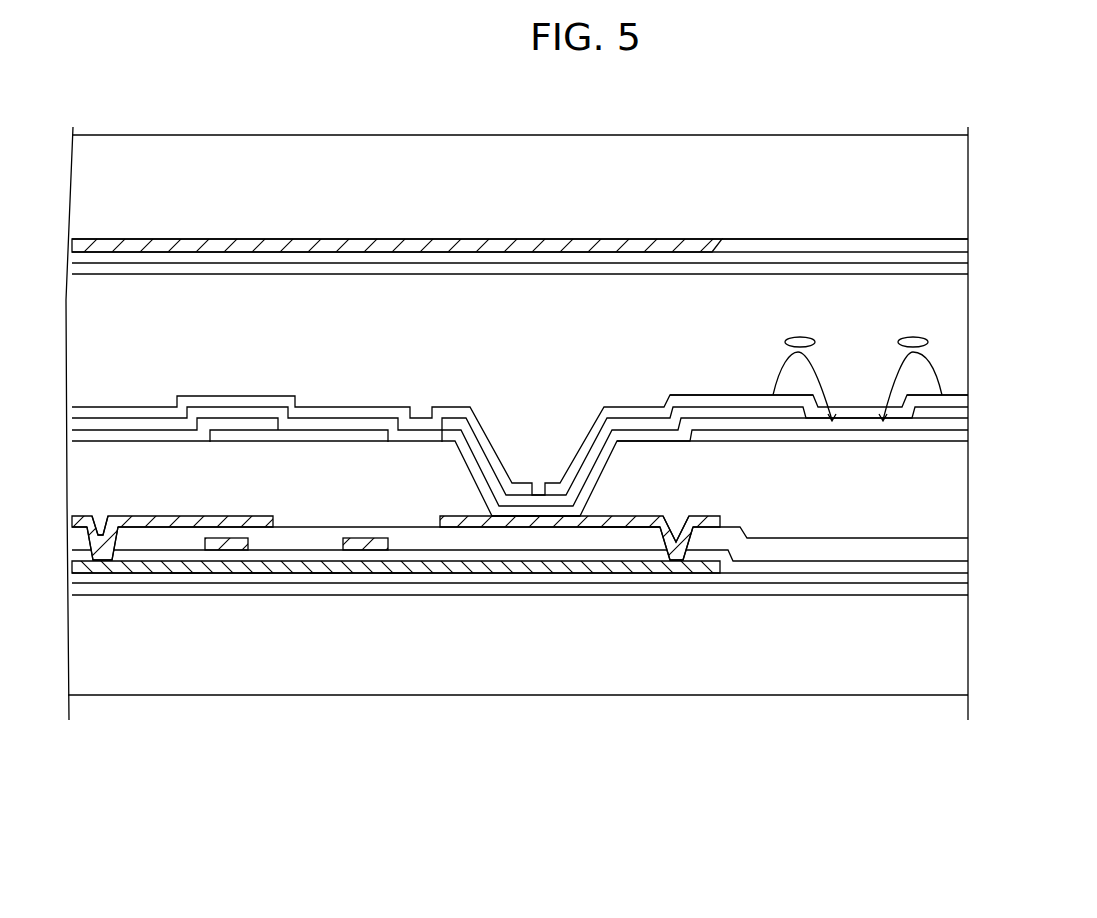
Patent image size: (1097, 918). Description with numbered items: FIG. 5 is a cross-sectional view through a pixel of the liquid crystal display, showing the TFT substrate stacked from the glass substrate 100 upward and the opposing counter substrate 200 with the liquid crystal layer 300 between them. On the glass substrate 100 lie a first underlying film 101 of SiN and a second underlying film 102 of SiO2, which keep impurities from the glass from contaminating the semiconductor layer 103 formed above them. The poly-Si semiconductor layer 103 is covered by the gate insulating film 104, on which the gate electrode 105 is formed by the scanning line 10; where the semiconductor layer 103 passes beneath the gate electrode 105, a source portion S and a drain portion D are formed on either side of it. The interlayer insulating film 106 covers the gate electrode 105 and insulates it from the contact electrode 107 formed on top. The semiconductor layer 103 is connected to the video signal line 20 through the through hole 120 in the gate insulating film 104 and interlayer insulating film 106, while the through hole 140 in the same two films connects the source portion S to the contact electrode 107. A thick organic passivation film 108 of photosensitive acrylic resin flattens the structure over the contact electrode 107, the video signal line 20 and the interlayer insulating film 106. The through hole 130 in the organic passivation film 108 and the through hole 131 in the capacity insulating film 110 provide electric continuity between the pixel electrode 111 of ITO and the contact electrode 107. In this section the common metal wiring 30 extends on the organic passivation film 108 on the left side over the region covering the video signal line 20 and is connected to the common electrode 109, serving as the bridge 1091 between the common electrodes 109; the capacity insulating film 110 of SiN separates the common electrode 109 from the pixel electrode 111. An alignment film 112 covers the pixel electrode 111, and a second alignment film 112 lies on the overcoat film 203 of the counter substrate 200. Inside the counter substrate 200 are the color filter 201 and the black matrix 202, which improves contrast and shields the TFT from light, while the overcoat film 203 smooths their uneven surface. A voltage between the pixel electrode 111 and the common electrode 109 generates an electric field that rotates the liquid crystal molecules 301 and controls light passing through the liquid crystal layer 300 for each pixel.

The glass substrate 100 is at (958, 688).
The first underlying film 101 is at (958, 592).
The second underlying film 102 is at (958, 578).
The semiconductor layer 103 is at (636, 570).
The gate insulating film 104 is at (478, 556).
The gate electrode 105 is at (274, 672).
The scanning line 10 is at (212, 550).
The drain portion D is at (185, 573).
The source portion S is at (255, 573).
The interlayer insulating film 106 is at (322, 527).
The contact electrode 107 is at (596, 524).
The organic passivation film 108 is at (960, 494).
The common electrode 109 is at (347, 435).
The bridge 1091 is at (162, 433).
The common metal wiring 30 is at (175, 377).
The capacity insulating film 110 is at (317, 423).
The pixel electrode 111 is at (712, 415).
The alignment film 112 is at (750, 268).
The through hole 120 is at (103, 520).
The video signal line 20 is at (160, 515).
The through hole 130 is at (593, 513).
The through hole 131 is at (541, 524).
The through hole 140 is at (677, 517).
The counter substrate 200 is at (953, 206).
The color filter 201 is at (826, 243).
The black matrix 202 is at (531, 238).
The overcoat film 203 is at (955, 258).
The liquid crystal layer 300 is at (950, 309).
The liquid crystal molecules 301 is at (786, 338).